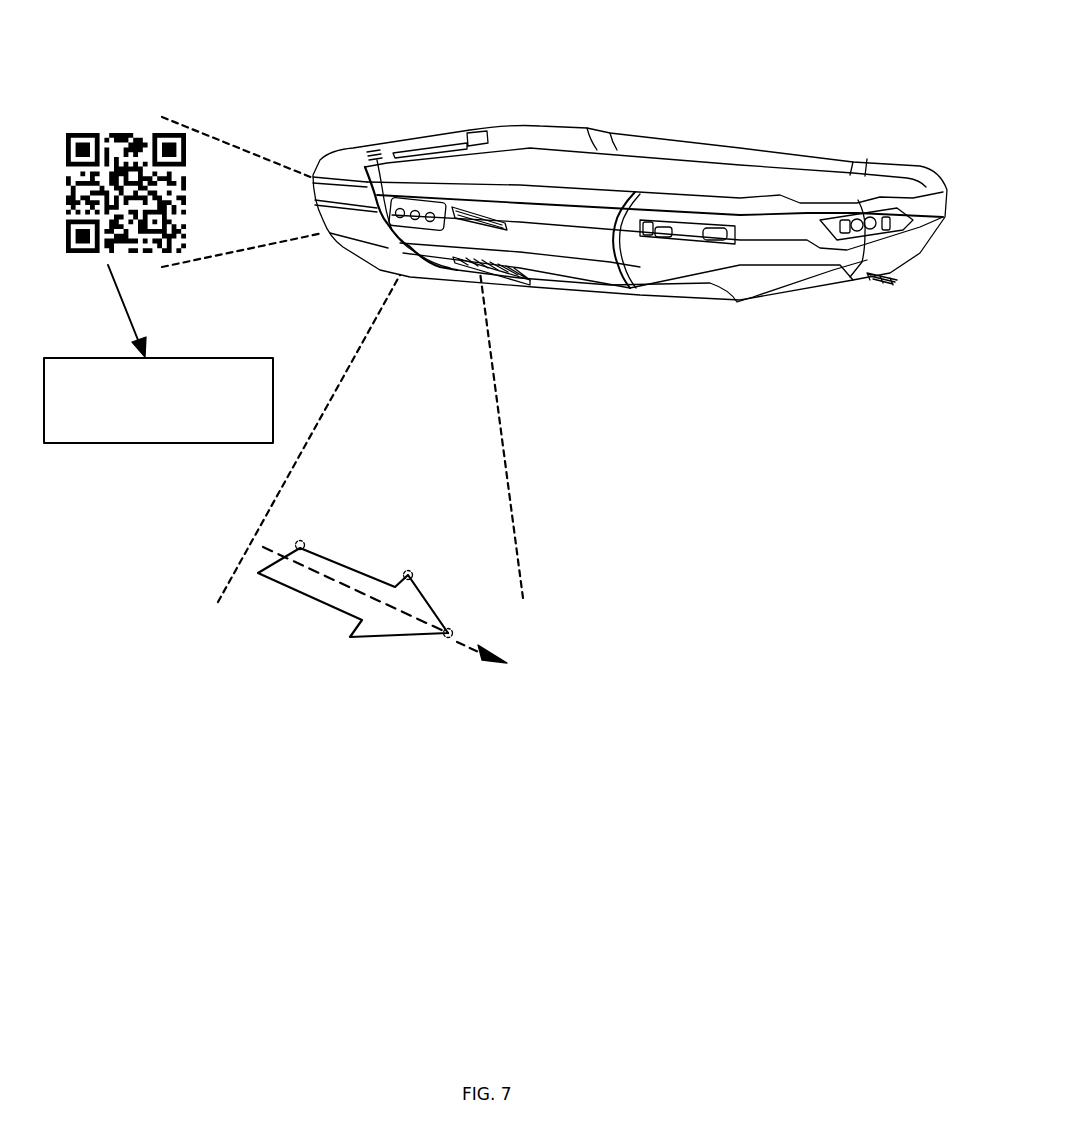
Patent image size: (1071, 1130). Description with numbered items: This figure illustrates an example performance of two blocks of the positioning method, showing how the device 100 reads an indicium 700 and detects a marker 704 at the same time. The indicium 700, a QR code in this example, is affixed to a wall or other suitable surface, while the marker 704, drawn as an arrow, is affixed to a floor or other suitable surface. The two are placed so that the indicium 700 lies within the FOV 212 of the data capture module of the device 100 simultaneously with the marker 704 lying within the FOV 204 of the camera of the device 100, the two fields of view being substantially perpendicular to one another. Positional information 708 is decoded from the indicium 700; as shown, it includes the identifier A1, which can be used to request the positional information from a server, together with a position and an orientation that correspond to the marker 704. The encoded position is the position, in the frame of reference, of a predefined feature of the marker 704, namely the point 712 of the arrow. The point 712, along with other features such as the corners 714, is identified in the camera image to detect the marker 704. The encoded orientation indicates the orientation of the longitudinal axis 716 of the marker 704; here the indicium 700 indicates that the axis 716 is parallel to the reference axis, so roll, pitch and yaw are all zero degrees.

The device 100 is at (713, 152).
The FOV of data capture module 212 is at (228, 143).
The FOV of camera 204 is at (505, 470).
The indicium 700 is at (92, 133).
The marker 704 is at (367, 638).
The positional information 708 is at (127, 443).
The point of the arrow 712 is at (448, 640).
The corners 714 is at (300, 545).
The longitudinal axis 716 is at (507, 663).